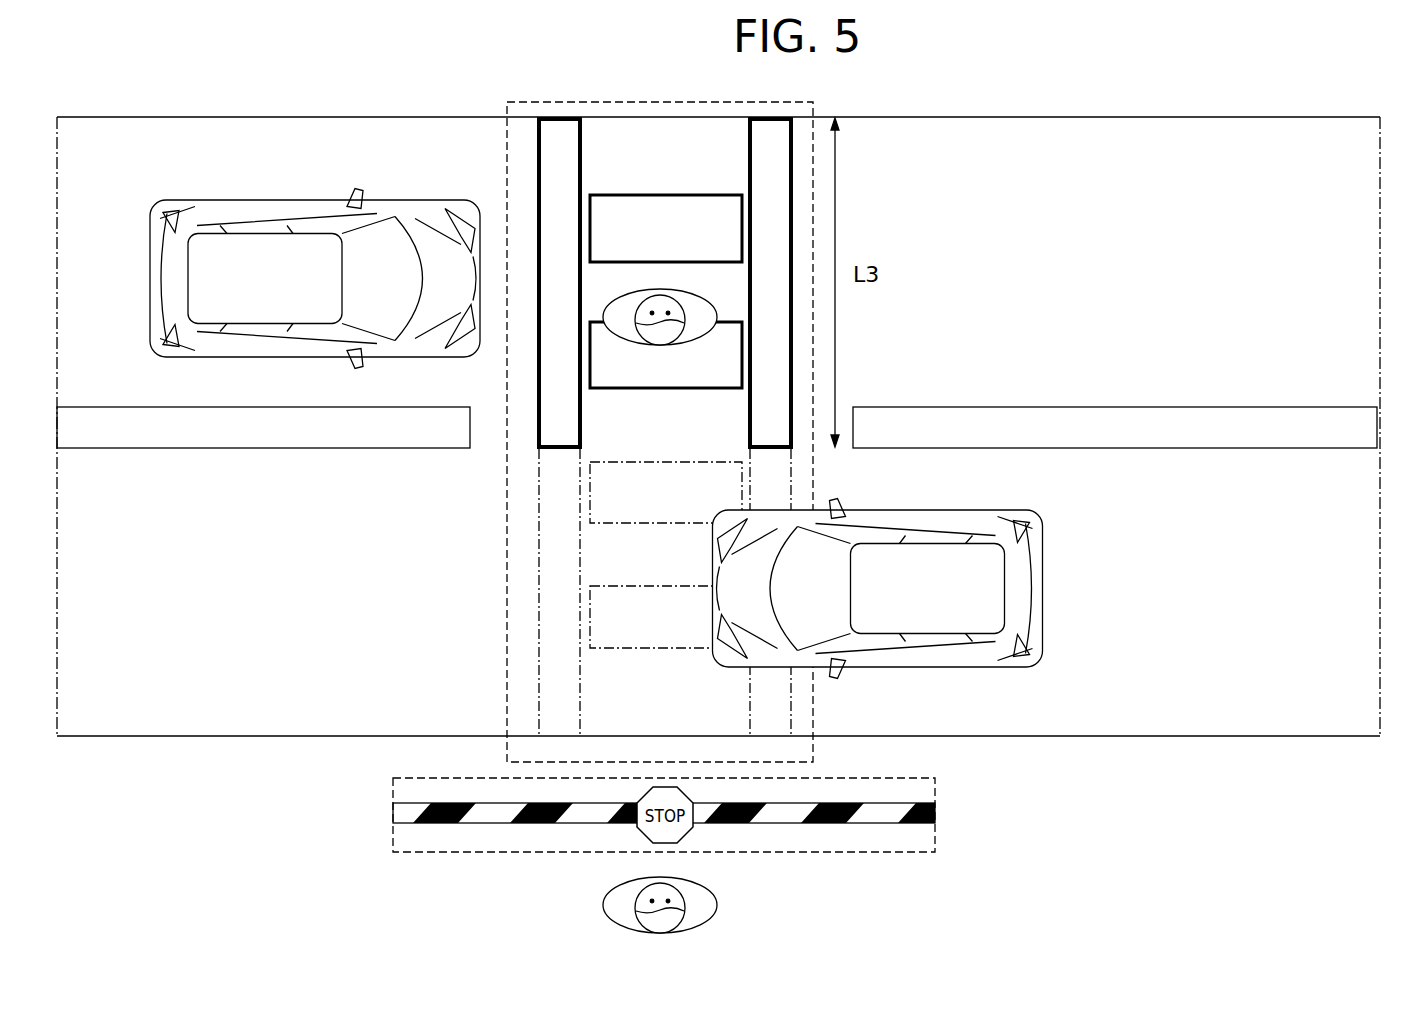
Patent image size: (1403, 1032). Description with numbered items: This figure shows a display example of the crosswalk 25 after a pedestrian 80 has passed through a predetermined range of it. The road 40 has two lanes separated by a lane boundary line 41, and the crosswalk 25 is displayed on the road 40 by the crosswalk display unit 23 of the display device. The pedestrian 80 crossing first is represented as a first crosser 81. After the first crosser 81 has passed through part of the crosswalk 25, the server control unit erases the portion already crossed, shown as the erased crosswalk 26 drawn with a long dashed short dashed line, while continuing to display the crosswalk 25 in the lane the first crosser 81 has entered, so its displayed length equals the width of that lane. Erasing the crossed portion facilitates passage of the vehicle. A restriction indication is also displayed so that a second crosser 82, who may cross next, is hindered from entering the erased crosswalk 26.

The crosswalk display unit 23 is at (507, 634).
The crosswalk 25 is at (558, 172).
The erased crosswalk 26 is at (540, 520).
The road 40 is at (1190, 216).
The lane boundary line 41 is at (1262, 422).
The pedestrian 80 is at (753, 541).
The first crosser 81 is at (658, 293).
The second crosser 82 is at (705, 898).